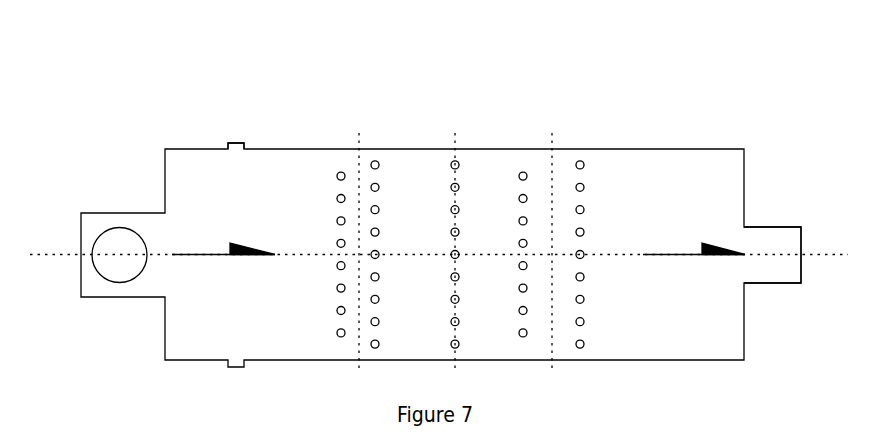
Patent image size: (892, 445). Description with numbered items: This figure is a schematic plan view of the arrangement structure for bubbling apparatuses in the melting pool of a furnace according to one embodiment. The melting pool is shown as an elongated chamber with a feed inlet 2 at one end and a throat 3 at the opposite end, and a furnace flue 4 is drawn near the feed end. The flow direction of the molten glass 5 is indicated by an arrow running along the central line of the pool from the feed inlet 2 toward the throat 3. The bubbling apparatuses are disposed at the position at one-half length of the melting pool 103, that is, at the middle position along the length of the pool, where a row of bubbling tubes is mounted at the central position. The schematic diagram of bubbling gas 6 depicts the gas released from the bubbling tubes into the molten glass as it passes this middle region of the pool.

The position at 1/2 length of the melting pool 103 is at (436, 115).
The feed inlet 2 is at (204, 118).
The throat 3 is at (788, 225).
The furnace flue 4 is at (87, 233).
The flow direction of the molten glass 5 is at (242, 218).
The schematic diagram of bubbling gas 6 is at (541, 254).